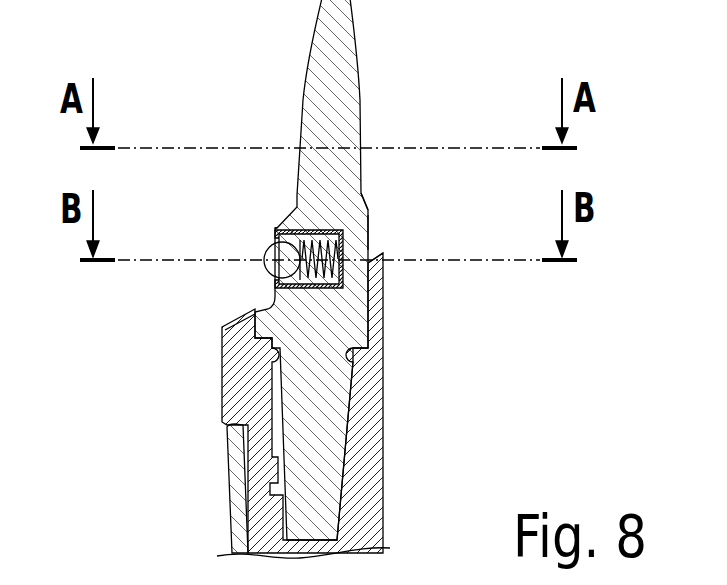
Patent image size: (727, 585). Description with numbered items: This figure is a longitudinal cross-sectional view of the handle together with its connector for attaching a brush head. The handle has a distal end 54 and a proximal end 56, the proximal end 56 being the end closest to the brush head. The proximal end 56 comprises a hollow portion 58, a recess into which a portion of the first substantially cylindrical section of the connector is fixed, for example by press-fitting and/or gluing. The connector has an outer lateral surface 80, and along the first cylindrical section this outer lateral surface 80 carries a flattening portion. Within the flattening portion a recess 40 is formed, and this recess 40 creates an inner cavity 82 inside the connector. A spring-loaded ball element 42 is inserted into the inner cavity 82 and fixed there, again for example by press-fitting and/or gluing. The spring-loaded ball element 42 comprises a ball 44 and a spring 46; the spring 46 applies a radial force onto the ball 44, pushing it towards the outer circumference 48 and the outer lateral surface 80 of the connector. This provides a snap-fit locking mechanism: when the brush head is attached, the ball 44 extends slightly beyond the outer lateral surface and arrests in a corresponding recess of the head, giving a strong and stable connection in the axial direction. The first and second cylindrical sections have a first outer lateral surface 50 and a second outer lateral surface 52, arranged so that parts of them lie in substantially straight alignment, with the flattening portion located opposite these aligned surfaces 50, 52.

The recess 40 is at (282, 224).
The spring-loaded ball element 42 is at (259, 253).
The ball 44 is at (277, 268).
The spring 46 is at (343, 243).
The outer circumference 48 is at (276, 229).
The first outer lateral surface 50 is at (369, 232).
The second outer lateral surface 52 is at (361, 118).
The distal end 54 is at (227, 552).
The proximal end 56 is at (388, 291).
The hollow portion 58 is at (268, 417).
The outer lateral surface 80 is at (368, 211).
The inner cavity 82 is at (318, 299).